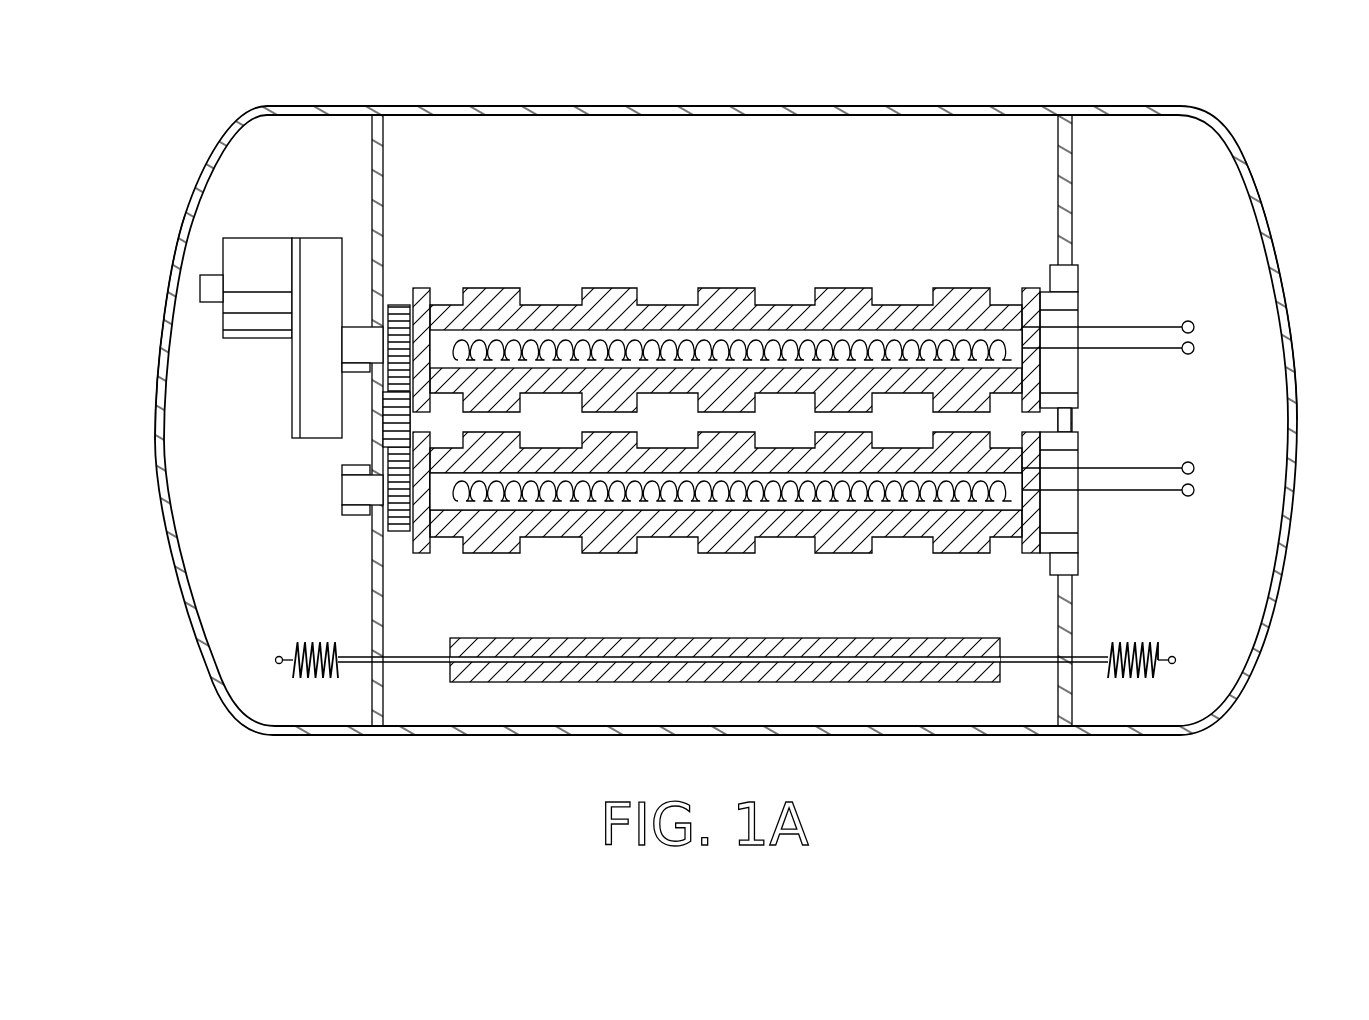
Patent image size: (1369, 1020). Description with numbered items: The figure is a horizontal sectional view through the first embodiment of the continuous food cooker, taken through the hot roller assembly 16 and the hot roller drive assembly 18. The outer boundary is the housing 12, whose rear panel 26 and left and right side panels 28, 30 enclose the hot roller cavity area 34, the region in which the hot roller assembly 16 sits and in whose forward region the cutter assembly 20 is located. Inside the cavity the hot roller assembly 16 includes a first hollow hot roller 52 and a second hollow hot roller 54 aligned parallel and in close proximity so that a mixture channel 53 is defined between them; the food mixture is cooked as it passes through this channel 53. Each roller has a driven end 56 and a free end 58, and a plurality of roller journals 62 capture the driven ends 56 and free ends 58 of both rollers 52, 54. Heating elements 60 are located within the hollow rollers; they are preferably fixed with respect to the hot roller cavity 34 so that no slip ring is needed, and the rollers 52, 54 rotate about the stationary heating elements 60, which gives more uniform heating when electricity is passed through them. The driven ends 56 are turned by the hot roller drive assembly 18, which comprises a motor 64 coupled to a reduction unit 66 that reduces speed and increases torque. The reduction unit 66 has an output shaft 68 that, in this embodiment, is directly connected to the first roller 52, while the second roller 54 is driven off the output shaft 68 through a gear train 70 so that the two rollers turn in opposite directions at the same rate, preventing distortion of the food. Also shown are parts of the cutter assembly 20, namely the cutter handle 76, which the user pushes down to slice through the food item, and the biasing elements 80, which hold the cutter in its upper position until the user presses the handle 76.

The housing 12 is at (205, 135).
The hot roller assembly 16 is at (803, 396).
The hot roller drive assembly 18 is at (268, 472).
The cutter assembly 20 is at (726, 717).
The rear panel 26 is at (662, 105).
The left side panel 28 is at (178, 265).
The right side panel 30 is at (1278, 262).
The hot roller cavity area 34 is at (400, 605).
The first hollow hot roller 52 is at (828, 300).
The mixture channel 53 is at (655, 417).
The second hollow hot roller 54 is at (832, 550).
The driven end 56 is at (423, 290).
The free end 58 is at (1028, 292).
The heating elements 60 is at (545, 338).
The roller journals 62 is at (352, 367).
The motor 64 is at (240, 250).
The reduction unit 66 is at (316, 250).
The output shaft 68 is at (368, 345).
The gear train 70 is at (402, 305).
The cutter handle 76 is at (853, 684).
The biasing element 80 is at (310, 680).